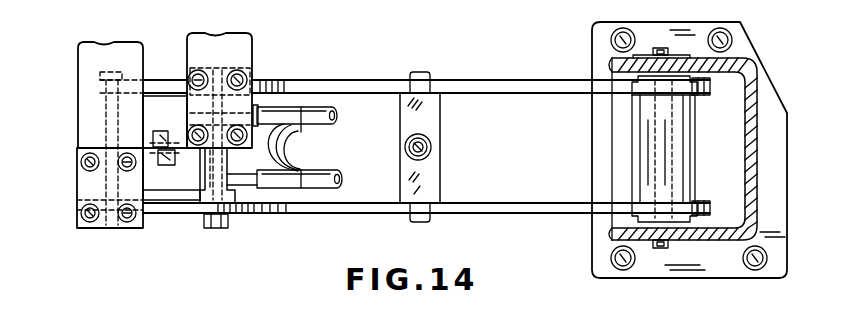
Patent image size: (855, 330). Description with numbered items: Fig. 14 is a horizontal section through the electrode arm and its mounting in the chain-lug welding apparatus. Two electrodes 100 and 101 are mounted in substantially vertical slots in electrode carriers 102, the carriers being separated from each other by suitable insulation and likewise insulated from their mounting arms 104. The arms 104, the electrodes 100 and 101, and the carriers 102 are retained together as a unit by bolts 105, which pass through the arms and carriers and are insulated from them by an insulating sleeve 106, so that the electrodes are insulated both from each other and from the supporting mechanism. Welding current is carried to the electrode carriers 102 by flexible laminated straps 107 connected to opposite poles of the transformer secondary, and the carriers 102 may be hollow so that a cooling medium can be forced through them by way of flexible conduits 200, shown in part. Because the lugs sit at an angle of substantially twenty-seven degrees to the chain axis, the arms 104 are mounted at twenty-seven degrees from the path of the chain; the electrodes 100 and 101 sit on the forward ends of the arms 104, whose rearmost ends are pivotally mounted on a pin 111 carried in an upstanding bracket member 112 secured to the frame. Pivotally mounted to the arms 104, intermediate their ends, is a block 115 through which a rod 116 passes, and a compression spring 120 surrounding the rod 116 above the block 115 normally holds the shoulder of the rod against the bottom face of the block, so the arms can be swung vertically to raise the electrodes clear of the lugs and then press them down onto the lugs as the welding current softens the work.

The electrode 100 is at (180, 125).
The electrode 101 is at (162, 170).
The electrode carrier 102 is at (156, 103).
The mounting arm 104 is at (381, 70).
The bolt 105 is at (108, 74).
The insulating sleeve 106 is at (100, 189).
The flexible laminated strap 107 is at (119, 32).
The pin 111 is at (660, 250).
The upstanding bracket member 112 is at (716, 246).
The block 115 is at (431, 117).
The rod 116 is at (431, 155).
The compression spring 120 is at (432, 145).
The flexible conduit 200 is at (312, 118).